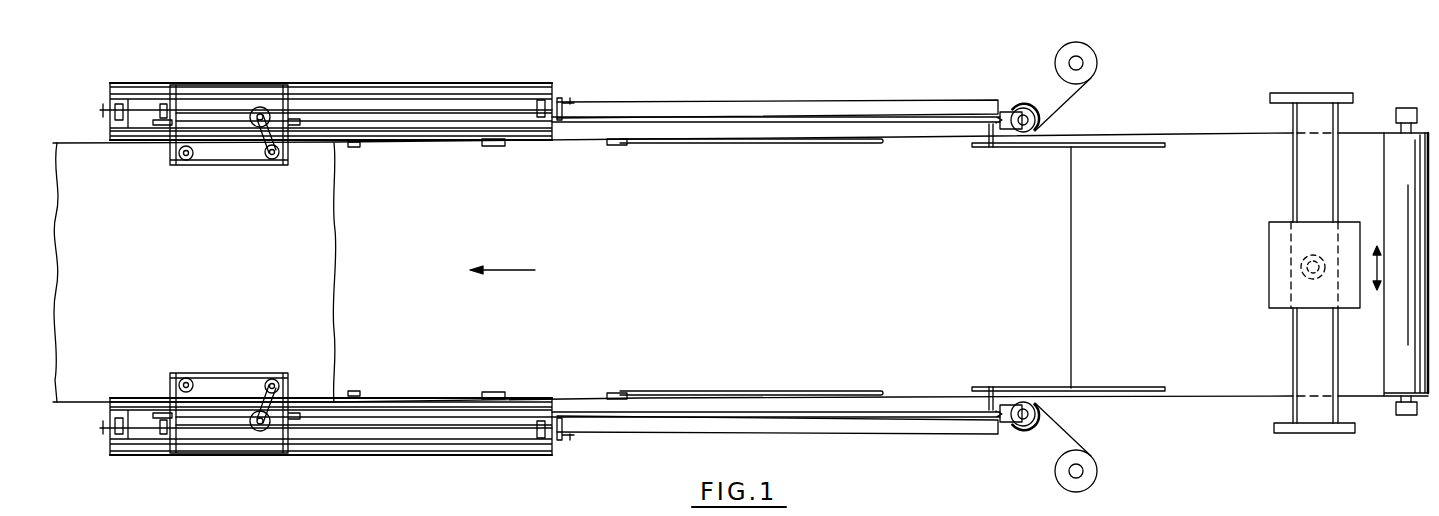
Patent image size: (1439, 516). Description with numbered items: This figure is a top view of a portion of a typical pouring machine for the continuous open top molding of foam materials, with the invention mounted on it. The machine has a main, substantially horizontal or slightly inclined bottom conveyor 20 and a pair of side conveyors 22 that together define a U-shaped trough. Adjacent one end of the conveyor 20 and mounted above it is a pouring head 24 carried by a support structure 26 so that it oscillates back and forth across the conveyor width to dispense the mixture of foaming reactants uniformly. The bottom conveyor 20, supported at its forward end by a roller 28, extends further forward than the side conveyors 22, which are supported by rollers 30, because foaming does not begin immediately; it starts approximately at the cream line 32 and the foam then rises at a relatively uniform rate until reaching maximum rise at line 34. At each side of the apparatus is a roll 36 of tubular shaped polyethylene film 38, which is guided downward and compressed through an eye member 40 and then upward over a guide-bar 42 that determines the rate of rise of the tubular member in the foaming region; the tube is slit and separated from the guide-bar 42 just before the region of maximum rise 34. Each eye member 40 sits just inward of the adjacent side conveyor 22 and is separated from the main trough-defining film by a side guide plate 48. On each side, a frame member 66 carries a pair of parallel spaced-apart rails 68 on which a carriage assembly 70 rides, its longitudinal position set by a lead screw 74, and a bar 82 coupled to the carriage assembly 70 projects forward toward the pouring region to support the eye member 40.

The conveyor 20 is at (1202, 158).
The side conveyors 22 is at (913, 140).
The pouring head 24 is at (1280, 278).
The support structure 26 is at (1305, 163).
The roller 28 is at (1397, 388).
The rollers 30 is at (1022, 106).
The cream line 32 is at (1073, 278).
The line of maximum rise 34 is at (334, 257).
The roll 36 is at (1090, 58).
The tubular polyethylene film 38 is at (1070, 98).
The eye member 40 is at (990, 147).
The guide-bars 42 is at (751, 141).
The side guide plate 48 is at (1112, 147).
The frame member 66 is at (788, 103).
The rails 68 is at (130, 141).
The carriage assembly 70 is at (215, 166).
The lead screw 74 is at (388, 108).
The bar 82 is at (650, 118).